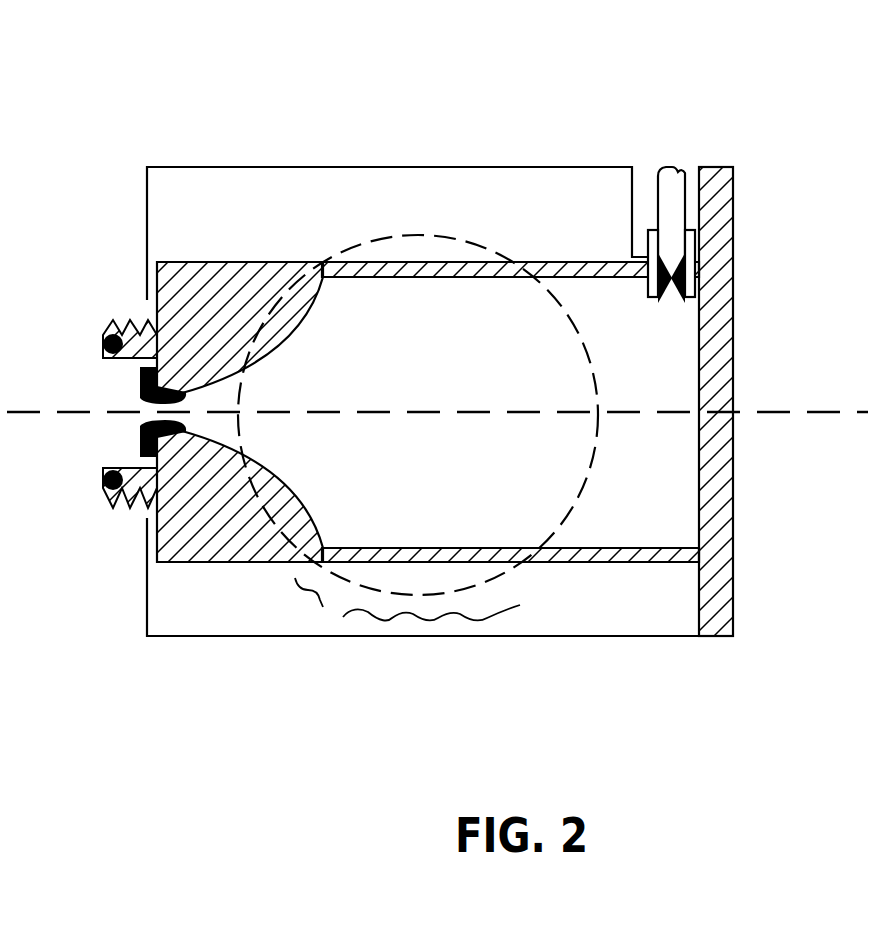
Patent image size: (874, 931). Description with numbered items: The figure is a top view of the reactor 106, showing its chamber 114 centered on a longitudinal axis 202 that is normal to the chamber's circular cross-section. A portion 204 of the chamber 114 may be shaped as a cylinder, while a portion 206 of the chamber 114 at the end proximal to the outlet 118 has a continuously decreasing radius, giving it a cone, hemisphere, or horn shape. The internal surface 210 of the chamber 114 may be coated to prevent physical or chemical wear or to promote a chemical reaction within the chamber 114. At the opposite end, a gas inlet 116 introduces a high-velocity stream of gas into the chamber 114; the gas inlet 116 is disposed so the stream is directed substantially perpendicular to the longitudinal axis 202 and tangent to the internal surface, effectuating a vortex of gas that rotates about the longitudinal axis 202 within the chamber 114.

The reactor 106 is at (733, 353).
The chamber 114 is at (733, 623).
The gas inlet 116 is at (672, 240).
The outlet 118 is at (140, 423).
The longitudinal axis 202 is at (463, 412).
The portion of the chamber 204 is at (443, 277).
The portion of the chamber 206 is at (302, 320).
The internal surface 210 is at (592, 548).